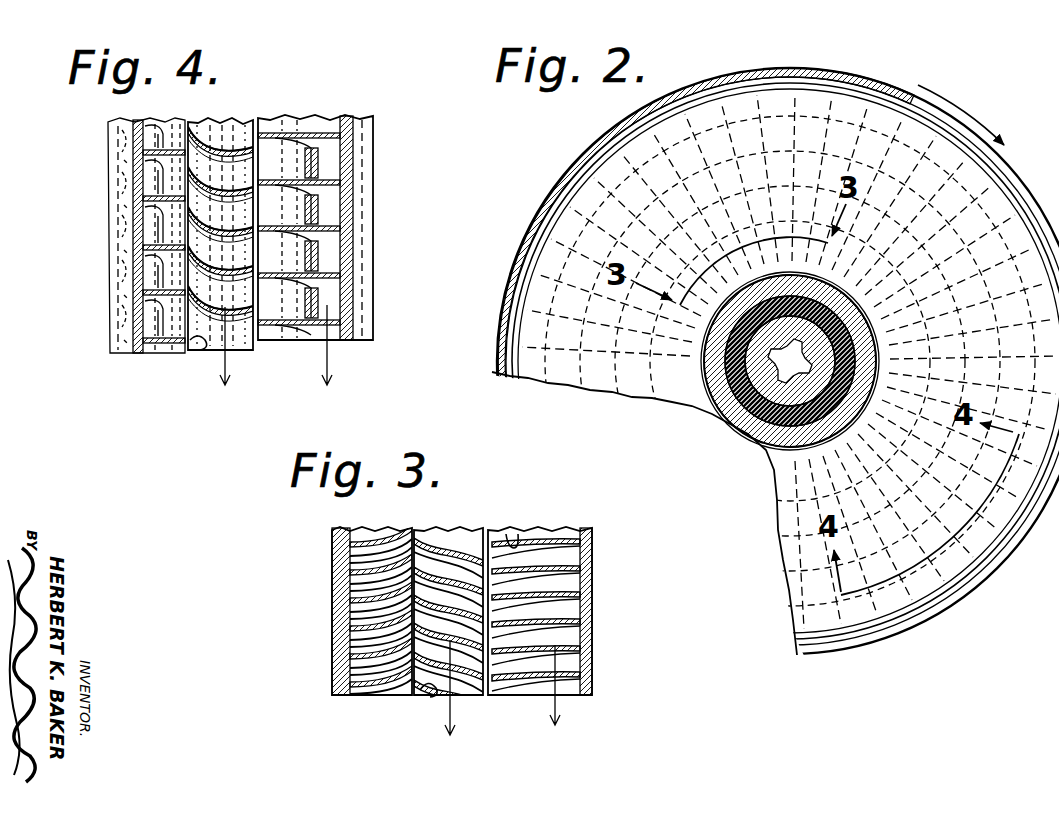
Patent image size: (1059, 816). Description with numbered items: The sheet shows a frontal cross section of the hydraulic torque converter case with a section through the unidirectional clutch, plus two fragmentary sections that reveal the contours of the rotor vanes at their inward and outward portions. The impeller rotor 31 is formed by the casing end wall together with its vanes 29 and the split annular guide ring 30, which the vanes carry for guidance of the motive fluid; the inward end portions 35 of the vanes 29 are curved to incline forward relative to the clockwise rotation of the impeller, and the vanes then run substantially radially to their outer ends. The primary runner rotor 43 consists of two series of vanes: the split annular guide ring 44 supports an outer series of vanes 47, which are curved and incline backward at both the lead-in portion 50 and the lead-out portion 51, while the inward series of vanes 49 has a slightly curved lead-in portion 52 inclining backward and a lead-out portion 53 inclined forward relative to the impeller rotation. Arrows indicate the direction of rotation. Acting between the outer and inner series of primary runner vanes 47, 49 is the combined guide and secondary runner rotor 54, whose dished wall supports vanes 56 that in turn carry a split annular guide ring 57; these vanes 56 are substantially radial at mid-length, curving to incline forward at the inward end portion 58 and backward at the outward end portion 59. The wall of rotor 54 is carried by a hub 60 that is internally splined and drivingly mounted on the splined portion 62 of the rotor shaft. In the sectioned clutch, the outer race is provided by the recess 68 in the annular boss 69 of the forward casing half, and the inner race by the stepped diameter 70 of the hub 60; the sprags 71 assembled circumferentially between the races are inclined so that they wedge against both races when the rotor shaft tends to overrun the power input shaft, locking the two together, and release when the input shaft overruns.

In FIG. 4, the vanes 29 is at (327, 207).
In FIG. 3, the vanes 29 is at (550, 573).
In FIG. 4, the split annular guide ring 30 is at (300, 257).
In FIG. 4, the impeller rotor 31 is at (372, 167).
In FIG. 3, the impeller rotor 31 is at (593, 550).
In FIG. 2, the impeller rotor 31 is at (920, 623).
In FIG. 3, the inward end portions 35 is at (513, 540).
In FIG. 4, the primary runner rotor 43 is at (237, 130).
In FIG. 3, the primary runner rotor 43 is at (460, 535).
In FIG. 2, the primary runner rotor 43 is at (945, 605).
In FIG. 4, the split annular guide ring 44 is at (235, 330).
In FIG. 4, the outer series of vanes 47 is at (240, 330).
In FIG. 2, the outer series of vanes 47 is at (790, 361).
In FIG. 3, the inward series of vanes 49 is at (460, 660).
In FIG. 4, the lead-in portion 50 is at (237, 320).
In FIG. 4, the lead-out portion 51 is at (195, 347).
In FIG. 3, the lead-in portion 52 is at (433, 673).
In FIG. 3, the lead-out portion 53 is at (477, 660).
In FIG. 4, the combined guide and secondary runner rotor 54 is at (118, 222).
In FIG. 3, the combined guide and secondary runner rotor 54 is at (335, 553).
In FIG. 2, the combined guide and secondary runner rotor 54 is at (980, 580).
In FIG. 4, the vanes 56 is at (157, 160).
In FIG. 3, the vanes 56 is at (370, 555).
In FIG. 2, the vanes 56 is at (790, 361).
In FIG. 4, the split annular guide ring 57 is at (173, 230).
In FIG. 3, the inward end portion 58 is at (393, 598).
In FIG. 2, the inward end portion 58 is at (790, 361).
In FIG. 4, the outward end portion 59 is at (180, 148).
In FIG. 2, the outward end portion 59 is at (790, 348).
In FIG. 2, the hub 60 is at (695, 412).
In FIG. 2, the splined portion 62 is at (720, 432).
In FIG. 2, the recess 68 is at (723, 405).
In FIG. 2, the annular boss 69 is at (683, 404).
In FIG. 2, the stepped diameter 70 is at (755, 433).
In FIG. 2, the sprags 71 is at (763, 440).